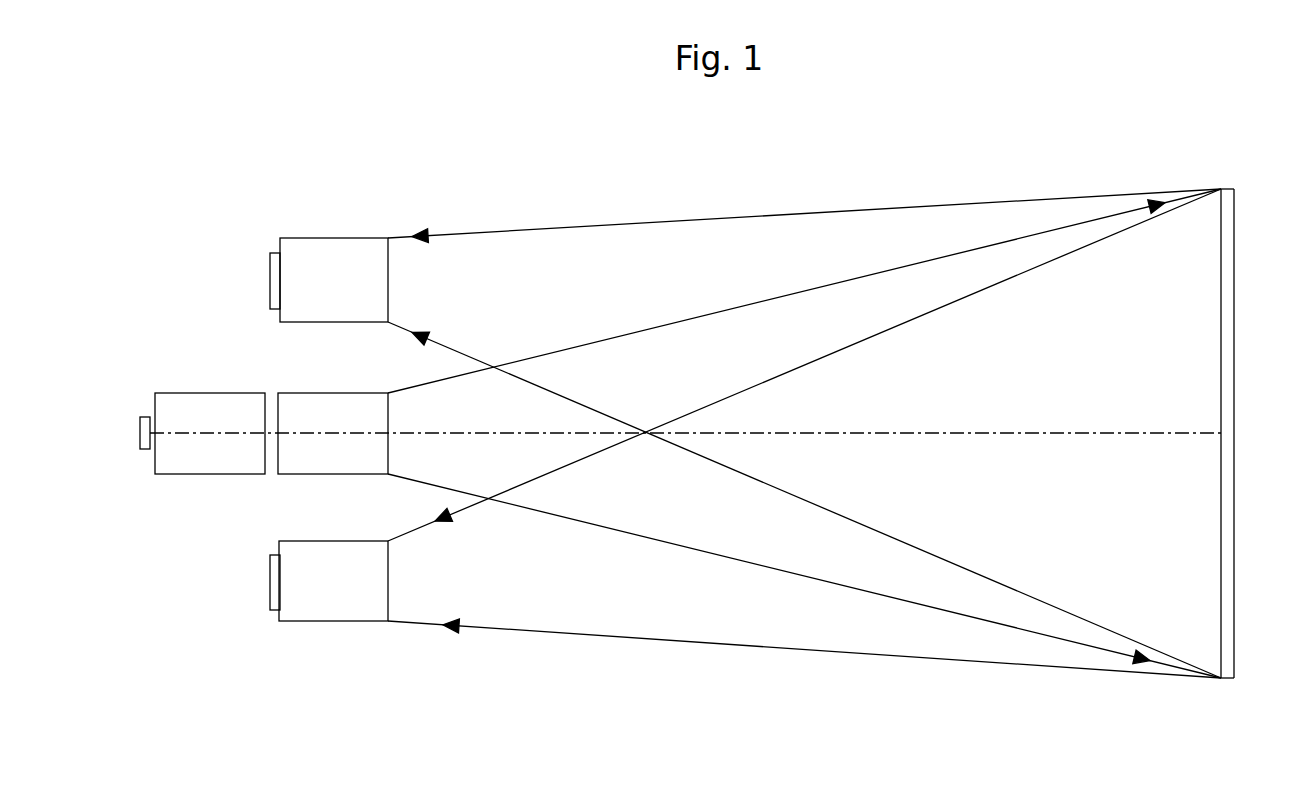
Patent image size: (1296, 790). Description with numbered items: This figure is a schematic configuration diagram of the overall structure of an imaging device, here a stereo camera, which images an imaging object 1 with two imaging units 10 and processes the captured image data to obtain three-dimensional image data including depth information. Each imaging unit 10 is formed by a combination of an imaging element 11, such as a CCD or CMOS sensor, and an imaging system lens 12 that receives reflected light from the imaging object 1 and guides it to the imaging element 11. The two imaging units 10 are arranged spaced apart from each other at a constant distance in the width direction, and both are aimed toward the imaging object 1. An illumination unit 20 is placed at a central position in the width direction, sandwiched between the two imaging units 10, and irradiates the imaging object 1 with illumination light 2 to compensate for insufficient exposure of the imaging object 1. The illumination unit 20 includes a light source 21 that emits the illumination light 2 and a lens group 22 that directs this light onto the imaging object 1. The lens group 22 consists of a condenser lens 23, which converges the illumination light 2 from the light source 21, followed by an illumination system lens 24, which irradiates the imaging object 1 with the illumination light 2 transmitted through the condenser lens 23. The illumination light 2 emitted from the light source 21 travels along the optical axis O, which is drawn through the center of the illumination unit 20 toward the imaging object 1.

The imaging object 1 is at (1235, 420).
The illumination light 2 is at (665, 325).
The imaging unit 10 is at (718, 428).
The imaging element 11 is at (270, 283).
The imaging system lens 12 is at (353, 238).
The illumination unit 20 is at (240, 450).
The light source 21 is at (140, 434).
The lens group 22 is at (271, 435).
The condenser lens 23 is at (222, 475).
The illumination system lens 24 is at (332, 475).
The optical axis O is at (1040, 440).